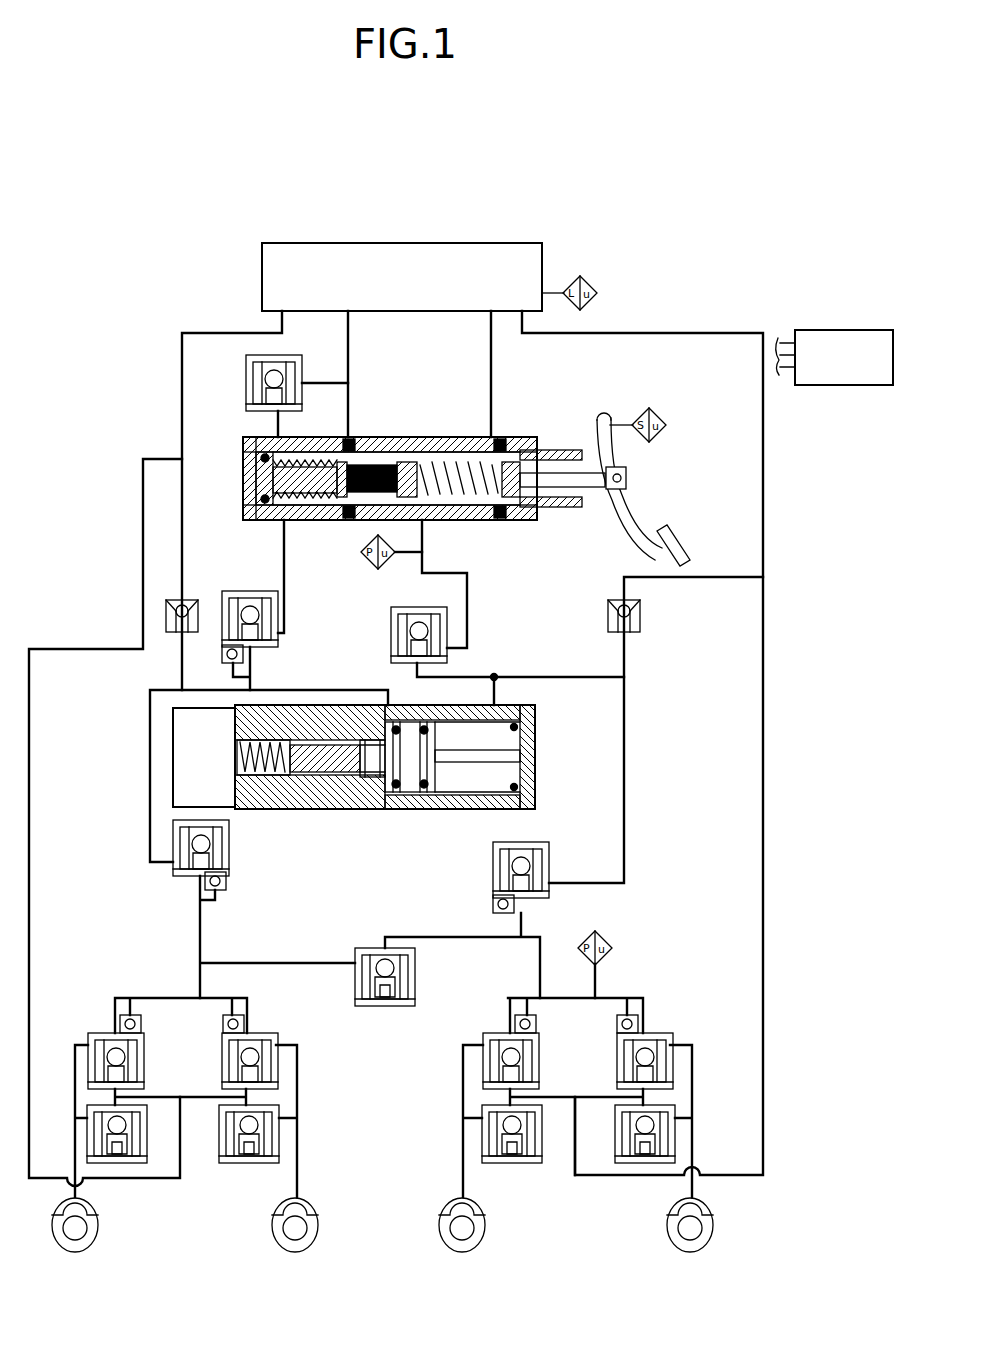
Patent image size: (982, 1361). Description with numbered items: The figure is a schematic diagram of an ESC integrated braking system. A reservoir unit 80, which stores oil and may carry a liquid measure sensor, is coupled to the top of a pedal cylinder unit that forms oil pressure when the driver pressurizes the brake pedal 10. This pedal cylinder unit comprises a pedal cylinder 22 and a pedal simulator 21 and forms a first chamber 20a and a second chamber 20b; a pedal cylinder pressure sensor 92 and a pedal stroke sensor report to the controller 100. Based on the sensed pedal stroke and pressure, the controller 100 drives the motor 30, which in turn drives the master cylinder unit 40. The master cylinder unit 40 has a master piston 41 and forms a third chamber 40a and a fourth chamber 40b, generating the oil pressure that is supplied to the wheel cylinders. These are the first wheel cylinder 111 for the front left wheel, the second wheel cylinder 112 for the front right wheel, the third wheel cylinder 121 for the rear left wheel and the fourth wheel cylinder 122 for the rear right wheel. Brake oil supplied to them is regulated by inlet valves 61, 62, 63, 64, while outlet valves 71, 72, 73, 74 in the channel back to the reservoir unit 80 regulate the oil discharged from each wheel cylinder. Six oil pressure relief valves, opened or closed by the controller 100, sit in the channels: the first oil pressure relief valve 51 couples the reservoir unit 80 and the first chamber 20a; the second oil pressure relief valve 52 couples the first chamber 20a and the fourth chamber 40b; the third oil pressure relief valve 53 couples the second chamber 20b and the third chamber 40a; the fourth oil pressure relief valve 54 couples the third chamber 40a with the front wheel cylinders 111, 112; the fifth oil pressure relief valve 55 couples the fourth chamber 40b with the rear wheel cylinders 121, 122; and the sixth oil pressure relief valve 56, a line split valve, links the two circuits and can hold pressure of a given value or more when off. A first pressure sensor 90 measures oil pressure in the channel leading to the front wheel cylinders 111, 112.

The brake pedal 10 is at (633, 503).
The first chamber 20a is at (314, 505).
The second chamber 20b is at (452, 500).
The pedal simulator 21 is at (377, 437).
The pedal cylinder 22 is at (428, 437).
The motor 30 is at (173, 755).
The master cylinder unit 40 is at (432, 812).
The third chamber 40a is at (468, 775).
The fourth chamber 40b is at (393, 795).
The master piston 41 is at (435, 735).
The first oil pressure relief valve 51 is at (246, 385).
The second oil pressure relief valve 52 is at (278, 620).
The third oil pressure relief valve 53 is at (447, 630).
The fourth oil pressure relief valve 54 is at (549, 856).
The fifth oil pressure relief valve 55 is at (173, 868).
The sixth oil pressure relief valve 56 is at (377, 948).
The inlet valve 61 is at (102, 1033).
The inlet valve 62 is at (262, 1033).
The inlet valve 63 is at (496, 1033).
The inlet valve 64 is at (657, 1033).
The outlet valve 71 is at (127, 1165).
The outlet valve 72 is at (240, 1165).
The outlet valve 73 is at (522, 1165).
The outlet valve 74 is at (634, 1165).
The reservoir unit 80 is at (403, 243).
The first pressure sensor 90 is at (608, 938).
The pedal cylinder pressure sensor 92 is at (384, 563).
The controller 100 is at (851, 330).
The first wheel cylinder 111 is at (485, 1232).
The second wheel cylinder 112 is at (713, 1232).
The third wheel cylinder 121 is at (98, 1232).
The fourth wheel cylinder 122 is at (318, 1232).